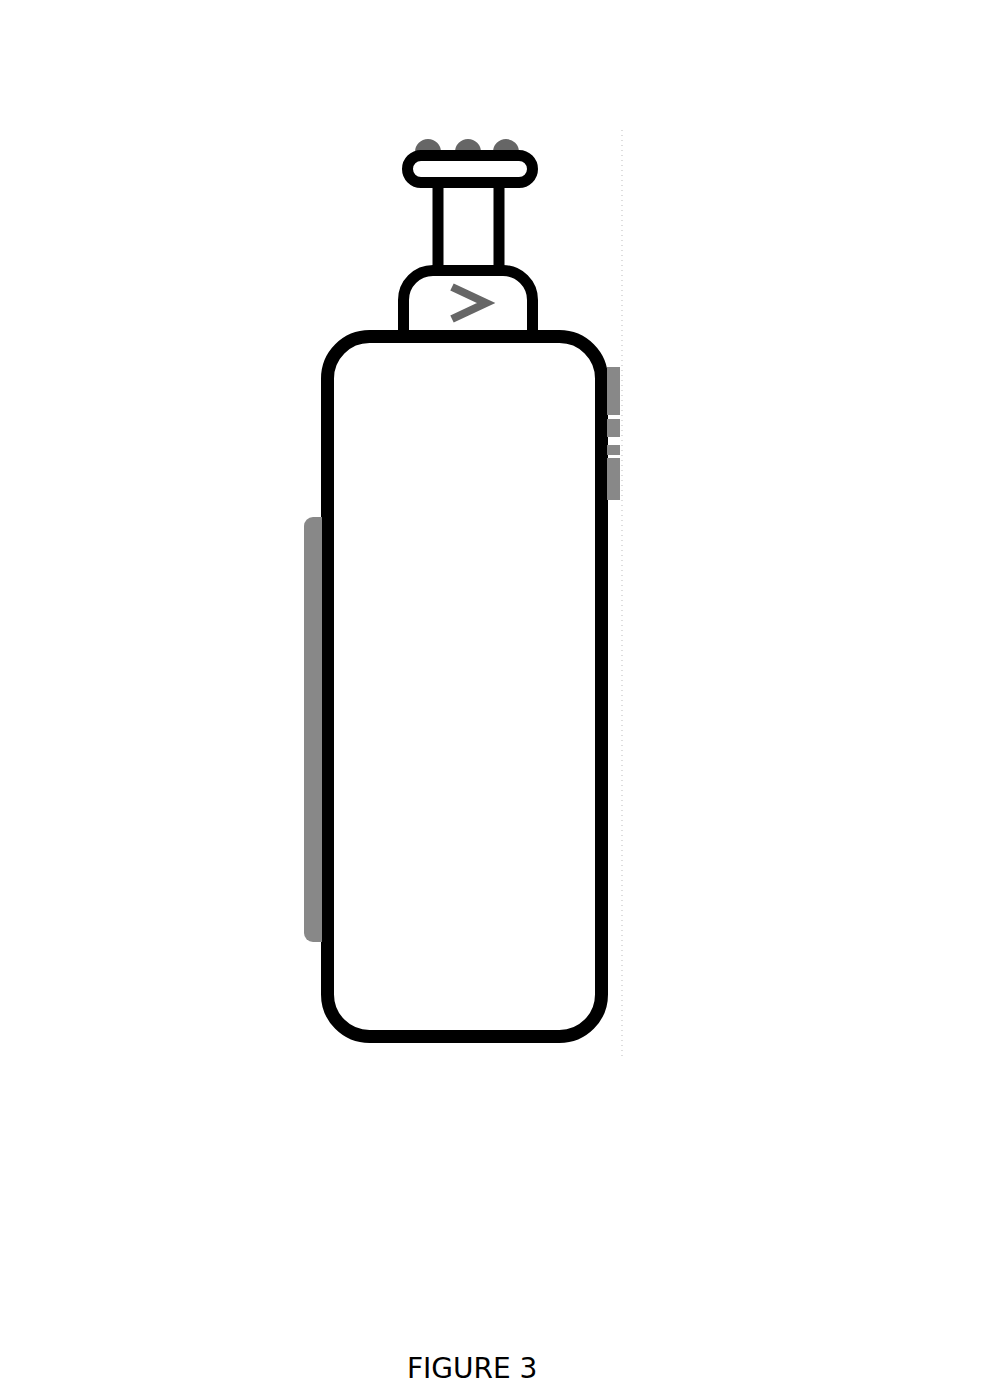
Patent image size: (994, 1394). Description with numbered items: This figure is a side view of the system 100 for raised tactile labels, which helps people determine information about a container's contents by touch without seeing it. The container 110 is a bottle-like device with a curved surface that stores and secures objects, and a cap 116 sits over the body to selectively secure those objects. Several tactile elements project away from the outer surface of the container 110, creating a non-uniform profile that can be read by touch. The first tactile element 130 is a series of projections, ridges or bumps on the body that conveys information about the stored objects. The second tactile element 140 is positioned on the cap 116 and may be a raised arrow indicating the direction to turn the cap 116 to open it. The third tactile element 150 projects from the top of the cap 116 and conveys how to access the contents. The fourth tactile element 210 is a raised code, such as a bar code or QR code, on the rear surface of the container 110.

The system 100 is at (152, 162).
The container 110 is at (322, 443).
The cap 116 is at (512, 268).
The first tactile element 130 is at (315, 752).
The second tactile element 140 is at (468, 300).
The third tactile element 150 is at (423, 142).
The fourth tactile element 210 is at (622, 430).